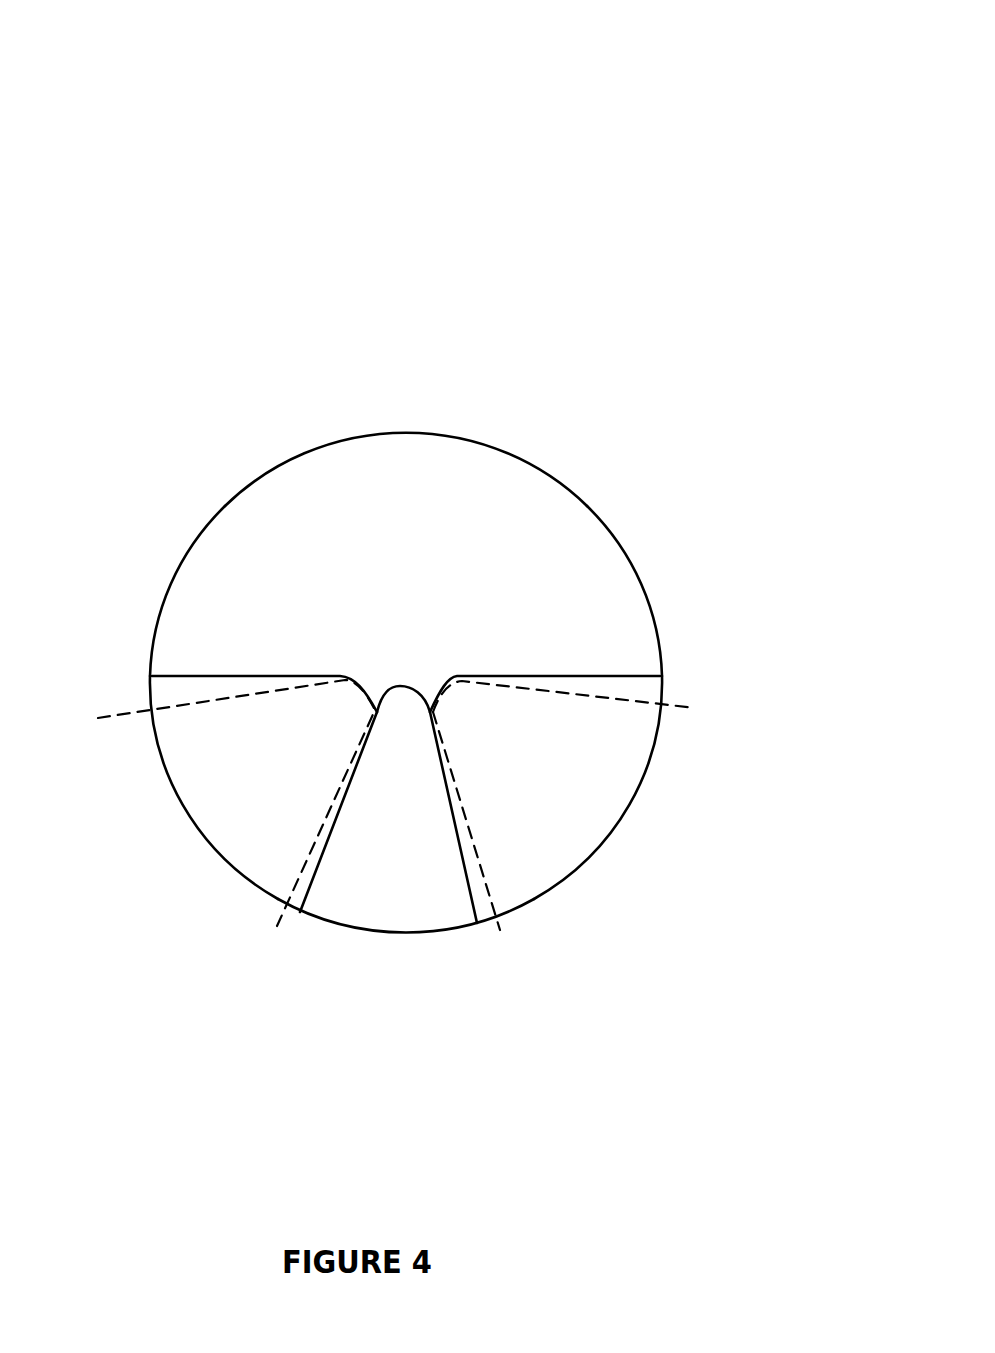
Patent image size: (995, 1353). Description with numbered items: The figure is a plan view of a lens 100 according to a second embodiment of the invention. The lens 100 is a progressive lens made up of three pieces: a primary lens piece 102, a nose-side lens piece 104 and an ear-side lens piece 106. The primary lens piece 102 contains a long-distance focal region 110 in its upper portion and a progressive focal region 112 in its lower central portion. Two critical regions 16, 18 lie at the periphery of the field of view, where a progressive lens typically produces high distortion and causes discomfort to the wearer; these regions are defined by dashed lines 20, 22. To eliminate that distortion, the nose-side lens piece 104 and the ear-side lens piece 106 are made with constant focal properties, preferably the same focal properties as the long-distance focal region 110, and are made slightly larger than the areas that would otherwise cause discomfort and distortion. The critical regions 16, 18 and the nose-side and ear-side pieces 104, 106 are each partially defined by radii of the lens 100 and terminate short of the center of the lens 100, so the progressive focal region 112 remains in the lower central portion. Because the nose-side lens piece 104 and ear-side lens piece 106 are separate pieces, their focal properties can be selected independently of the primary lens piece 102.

The lens 100 is at (604, 55).
The primary lens piece 102 is at (630, 578).
The nose-side lens piece 104 is at (155, 692).
The ear-side lens piece 106 is at (655, 693).
The long-distance focal region 110 is at (414, 446).
The progressive focal region 112 is at (412, 923).
The critical region 16 is at (178, 787).
The critical region 18 is at (628, 765).
The dashed line 20 is at (265, 942).
The dashed line 22 is at (508, 940).